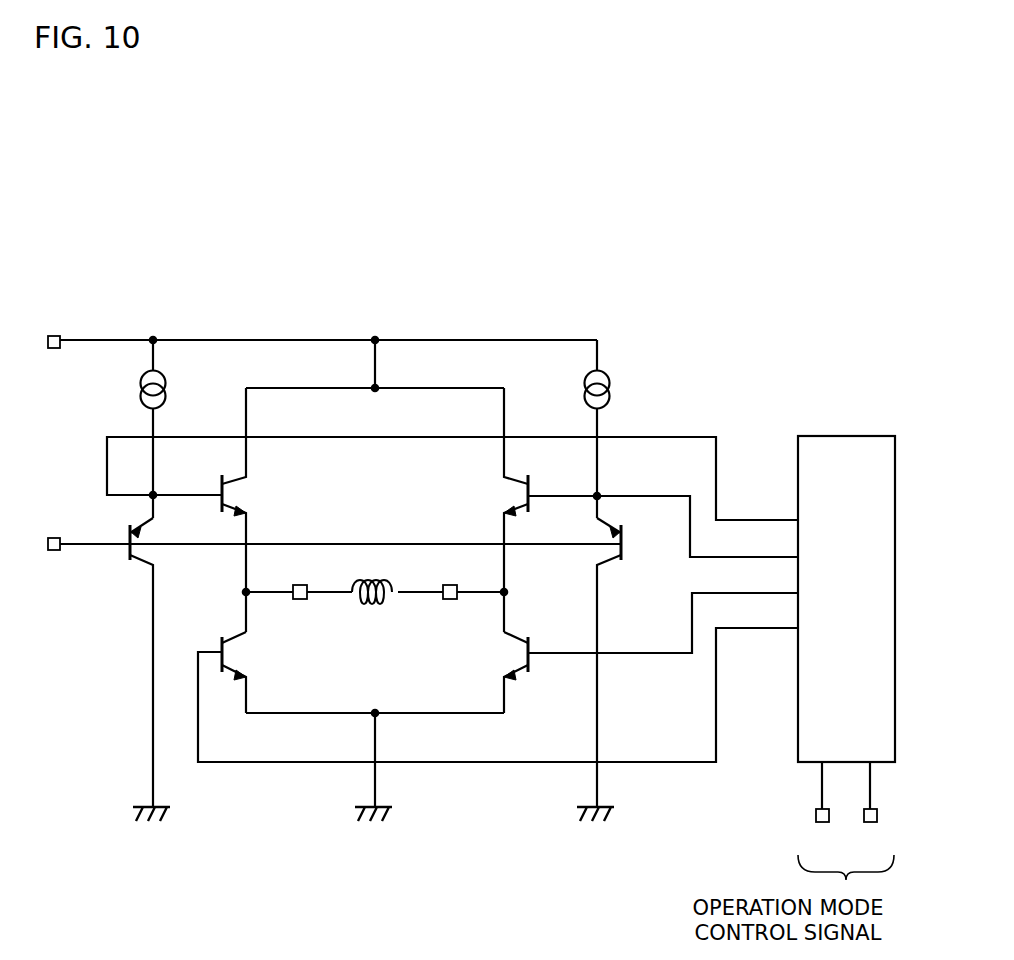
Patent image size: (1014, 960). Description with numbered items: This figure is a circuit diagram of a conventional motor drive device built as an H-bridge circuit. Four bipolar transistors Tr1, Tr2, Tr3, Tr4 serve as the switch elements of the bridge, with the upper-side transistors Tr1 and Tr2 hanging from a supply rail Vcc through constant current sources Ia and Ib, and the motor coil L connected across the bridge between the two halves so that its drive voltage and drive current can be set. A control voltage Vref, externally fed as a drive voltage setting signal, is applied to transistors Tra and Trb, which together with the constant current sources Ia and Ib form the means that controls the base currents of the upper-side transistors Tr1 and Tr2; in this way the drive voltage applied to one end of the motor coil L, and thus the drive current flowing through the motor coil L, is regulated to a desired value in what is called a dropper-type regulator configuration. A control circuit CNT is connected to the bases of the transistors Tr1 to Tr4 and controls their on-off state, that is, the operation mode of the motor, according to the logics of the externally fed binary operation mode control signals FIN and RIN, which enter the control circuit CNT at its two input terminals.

The power supply voltage terminal Vcc is at (316, 330).
The control voltage Vref is at (327, 532).
The constant current source Ia is at (140, 390).
The constant current source Ib is at (610, 390).
The bipolar transistor Tr1 is at (224, 479).
The bipolar transistor Tr2 is at (540, 470).
The bipolar transistor Tr3 is at (224, 639).
The bipolar transistor Tr4 is at (540, 630).
The transistor Tra is at (129, 561).
The transistor Trb is at (622, 561).
The motor coil L is at (375, 604).
The control circuit CNT is at (843, 434).
The operation mode control signal FIN is at (821, 807).
The operation mode control signal RIN is at (866, 807).